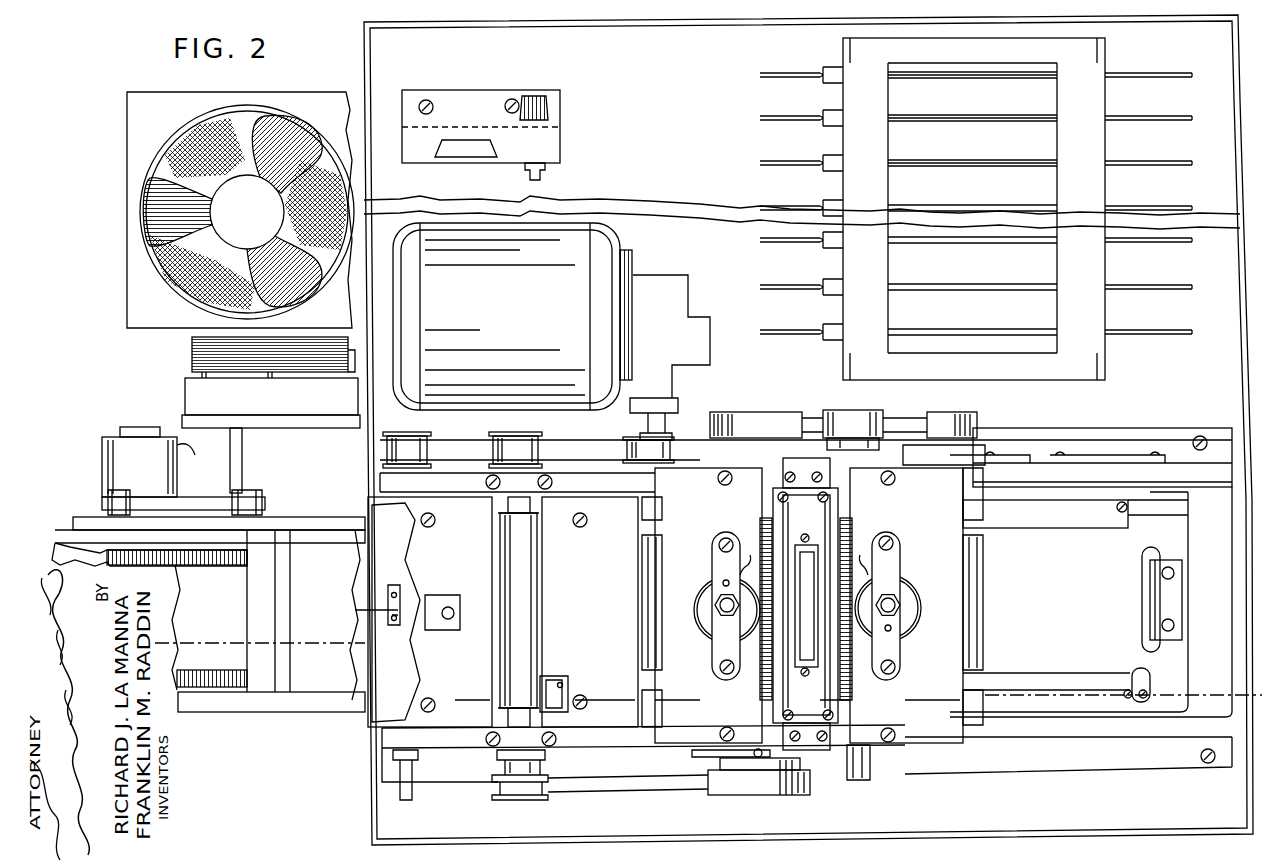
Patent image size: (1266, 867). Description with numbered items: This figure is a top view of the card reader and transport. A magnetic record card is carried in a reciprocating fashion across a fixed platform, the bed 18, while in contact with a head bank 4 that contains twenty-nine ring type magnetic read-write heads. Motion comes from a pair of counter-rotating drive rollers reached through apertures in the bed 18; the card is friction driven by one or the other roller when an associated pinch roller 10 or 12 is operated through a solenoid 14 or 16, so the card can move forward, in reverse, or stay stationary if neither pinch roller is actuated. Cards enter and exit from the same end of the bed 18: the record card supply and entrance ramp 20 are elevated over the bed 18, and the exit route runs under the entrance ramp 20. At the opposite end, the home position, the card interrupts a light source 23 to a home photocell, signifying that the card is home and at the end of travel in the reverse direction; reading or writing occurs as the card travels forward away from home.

The head bank 4 is at (190, 612).
The pinch roller 10 is at (760, 530).
The pinch roller 12 is at (850, 535).
The solenoid 14 is at (698, 595).
The solenoid 16 is at (905, 578).
The bed 18 is at (1180, 545).
The entrance ramp 20 is at (218, 594).
The light source 23 is at (1136, 675).